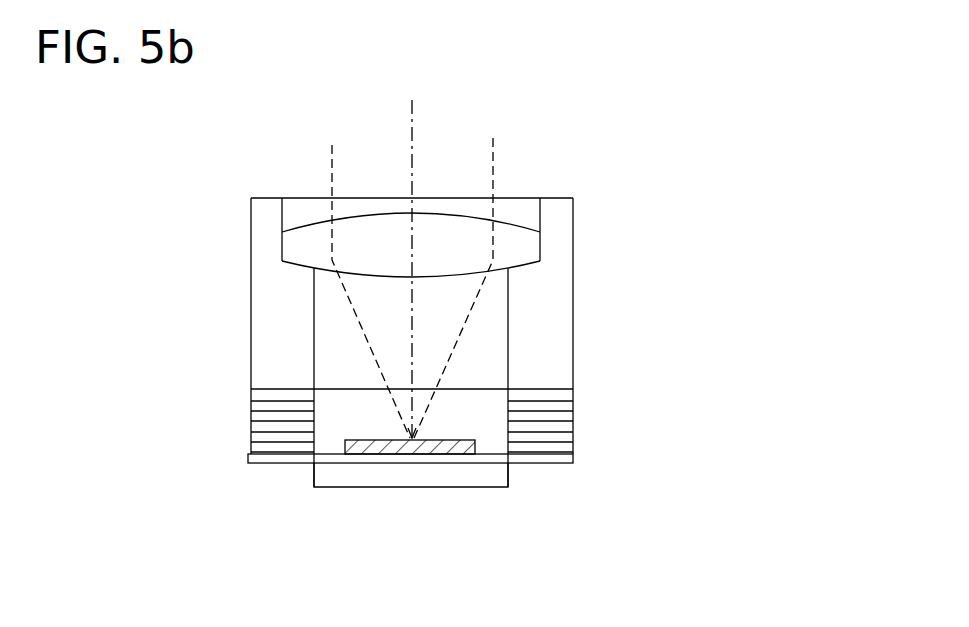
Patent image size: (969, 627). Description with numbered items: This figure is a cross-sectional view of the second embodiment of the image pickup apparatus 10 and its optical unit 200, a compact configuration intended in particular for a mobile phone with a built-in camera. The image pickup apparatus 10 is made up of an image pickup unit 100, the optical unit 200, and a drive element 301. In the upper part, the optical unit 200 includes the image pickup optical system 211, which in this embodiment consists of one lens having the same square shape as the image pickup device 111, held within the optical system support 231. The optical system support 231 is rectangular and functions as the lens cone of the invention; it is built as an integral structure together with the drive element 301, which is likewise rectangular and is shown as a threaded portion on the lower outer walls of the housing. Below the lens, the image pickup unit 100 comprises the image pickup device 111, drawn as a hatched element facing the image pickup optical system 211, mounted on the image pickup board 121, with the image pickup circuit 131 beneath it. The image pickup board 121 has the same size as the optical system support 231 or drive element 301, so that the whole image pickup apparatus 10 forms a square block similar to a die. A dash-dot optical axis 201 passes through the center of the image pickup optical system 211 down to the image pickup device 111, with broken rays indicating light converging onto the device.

The image pickup apparatus 10 is at (740, 147).
The optical unit 200 is at (740, 277).
The image pickup unit 100 is at (740, 500).
The optical axis 201 is at (413, 100).
The image pickup optical system 211 is at (510, 245).
The optical system support 231 is at (573, 357).
The drive element 301 is at (573, 420).
The image pickup device 111 is at (378, 455).
The image pickup circuit 131 is at (442, 488).
The image pickup board 121 is at (539, 461).